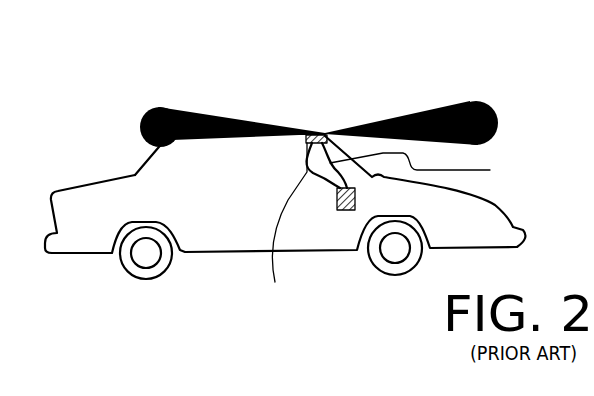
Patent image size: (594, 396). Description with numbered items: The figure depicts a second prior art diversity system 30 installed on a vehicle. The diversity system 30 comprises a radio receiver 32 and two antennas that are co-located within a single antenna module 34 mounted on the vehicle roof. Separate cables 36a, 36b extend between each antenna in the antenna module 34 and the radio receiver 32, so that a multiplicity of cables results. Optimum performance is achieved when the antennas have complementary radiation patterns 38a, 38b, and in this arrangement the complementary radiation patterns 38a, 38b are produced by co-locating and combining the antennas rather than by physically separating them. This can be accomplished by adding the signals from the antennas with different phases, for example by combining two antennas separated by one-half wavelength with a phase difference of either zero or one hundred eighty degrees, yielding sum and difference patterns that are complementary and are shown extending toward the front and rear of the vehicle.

The prior art diversity system 30 is at (273, 72).
The radio receiver 32 is at (343, 212).
The antenna module 34 is at (320, 134).
The cable 36a is at (277, 234).
The cable 36b is at (443, 170).
The radiation pattern 38a is at (473, 101).
The radiation pattern 38b is at (150, 107).